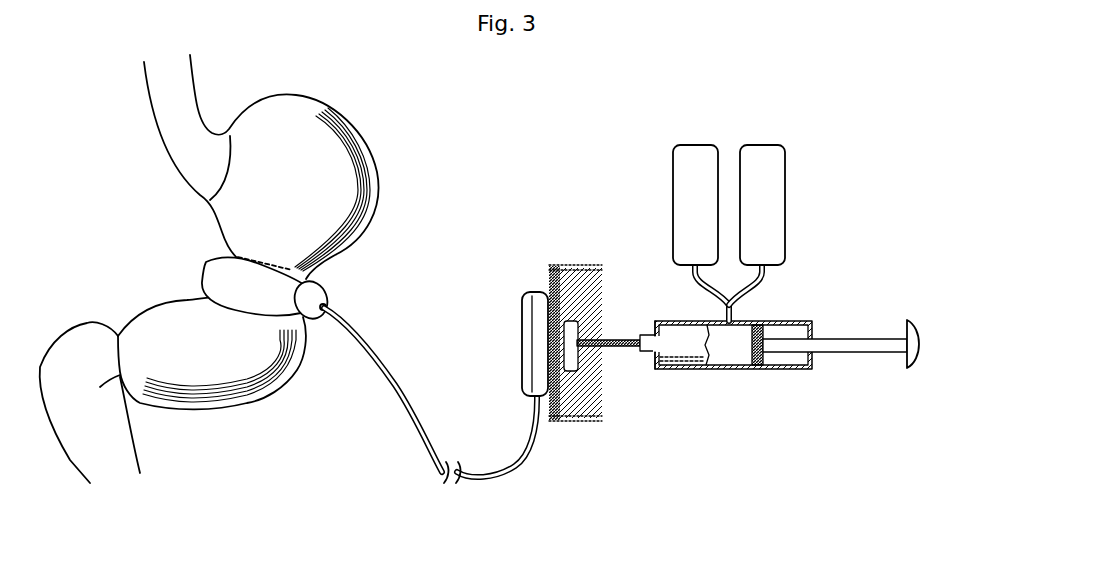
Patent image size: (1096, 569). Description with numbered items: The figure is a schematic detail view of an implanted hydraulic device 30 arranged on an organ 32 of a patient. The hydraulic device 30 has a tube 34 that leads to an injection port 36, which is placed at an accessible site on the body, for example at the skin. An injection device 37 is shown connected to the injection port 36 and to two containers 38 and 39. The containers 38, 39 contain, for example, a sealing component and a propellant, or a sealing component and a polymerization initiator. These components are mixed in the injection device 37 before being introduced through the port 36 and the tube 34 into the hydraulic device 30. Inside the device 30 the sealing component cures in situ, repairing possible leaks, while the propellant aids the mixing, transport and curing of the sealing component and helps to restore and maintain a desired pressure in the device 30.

The implanted hydraulic device 30 is at (208, 265).
The organ 32 is at (330, 183).
The tube 34 is at (397, 390).
The injection port 36 is at (570, 328).
The injection device 37 is at (740, 368).
The container 38 is at (692, 157).
The container 39 is at (767, 157).